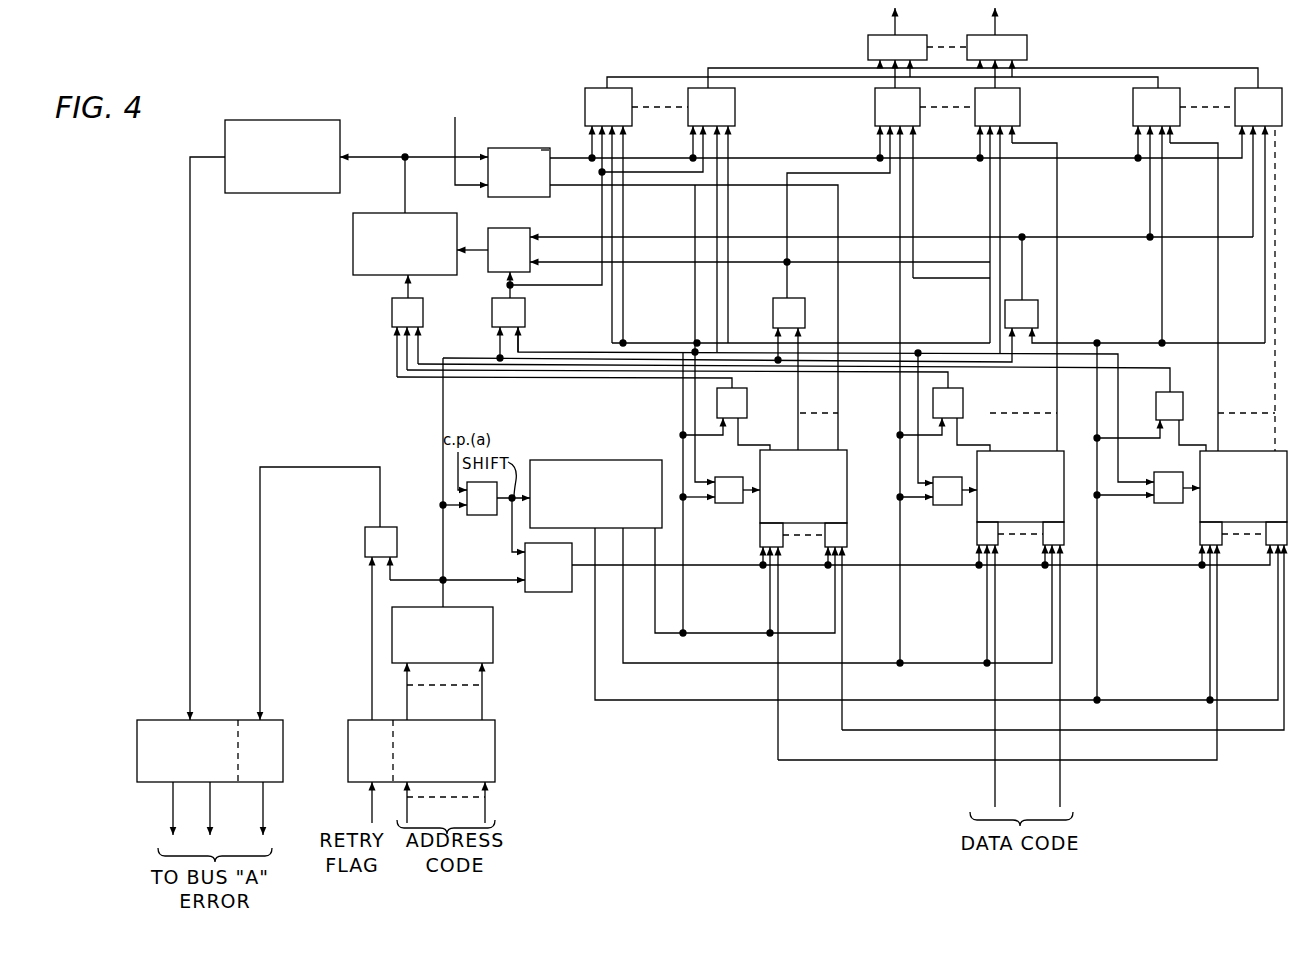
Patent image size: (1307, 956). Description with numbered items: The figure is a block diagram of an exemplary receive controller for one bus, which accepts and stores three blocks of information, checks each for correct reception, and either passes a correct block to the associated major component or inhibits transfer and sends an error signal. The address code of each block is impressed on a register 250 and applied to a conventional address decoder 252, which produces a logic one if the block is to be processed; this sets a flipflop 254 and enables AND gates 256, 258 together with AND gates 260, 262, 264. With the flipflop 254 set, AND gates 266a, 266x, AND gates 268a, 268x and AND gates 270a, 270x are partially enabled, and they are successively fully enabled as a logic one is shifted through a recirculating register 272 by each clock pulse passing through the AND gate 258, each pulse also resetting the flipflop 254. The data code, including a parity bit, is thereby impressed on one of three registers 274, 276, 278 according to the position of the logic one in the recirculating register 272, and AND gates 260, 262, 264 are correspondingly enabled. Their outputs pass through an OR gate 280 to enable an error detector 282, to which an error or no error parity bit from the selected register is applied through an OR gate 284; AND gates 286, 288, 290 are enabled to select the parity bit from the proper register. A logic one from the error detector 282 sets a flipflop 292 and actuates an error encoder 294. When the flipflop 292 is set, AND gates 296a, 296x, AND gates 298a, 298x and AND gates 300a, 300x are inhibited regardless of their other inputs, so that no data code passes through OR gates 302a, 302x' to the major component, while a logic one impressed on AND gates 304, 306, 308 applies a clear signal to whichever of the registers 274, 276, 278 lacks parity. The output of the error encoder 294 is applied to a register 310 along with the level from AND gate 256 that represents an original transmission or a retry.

The register 250 is at (495, 730).
The address decoder 252 is at (493, 644).
The flipflop 254 is at (554, 592).
The AND gate 256 is at (392, 527).
The AND gate 258 is at (490, 515).
The AND gate 260 is at (492, 312).
The AND gate 262 is at (773, 306).
The AND gate 264 is at (1035, 300).
The AND gate 266a is at (760, 536).
The AND gate 266x is at (847, 530).
The AND gate 268a is at (977, 534).
The AND gate 268x is at (1064, 530).
The AND gate 270a is at (1200, 534).
The AND gate 270x is at (1265, 543).
The recirculating register 272 is at (608, 460).
The register 274 is at (847, 458).
The register 276 is at (1064, 458).
The register 278 is at (1240, 451).
The OR gate 280 is at (520, 232).
The error detector 282 is at (353, 246).
The OR gate 284 is at (392, 311).
The AND gate 286 is at (747, 410).
The AND gate 288 is at (963, 410).
The AND gate 290 is at (1156, 404).
The flipflop 292 is at (515, 148).
The error encoder 294 is at (318, 120).
The AND gate 296a is at (588, 88).
The AND gate 296x is at (700, 88).
The AND gate 298a is at (875, 116).
The AND gate 298x is at (1020, 108).
The AND gate 300a is at (1163, 88).
The AND gate 300x is at (1265, 88).
The OR gate 302a is at (868, 50).
The OR gate 302x' is at (1026, 34).
The AND gate 304 is at (729, 477).
The AND gate 306 is at (947, 477).
The AND gate 308 is at (1168, 472).
The register 310 is at (154, 720).